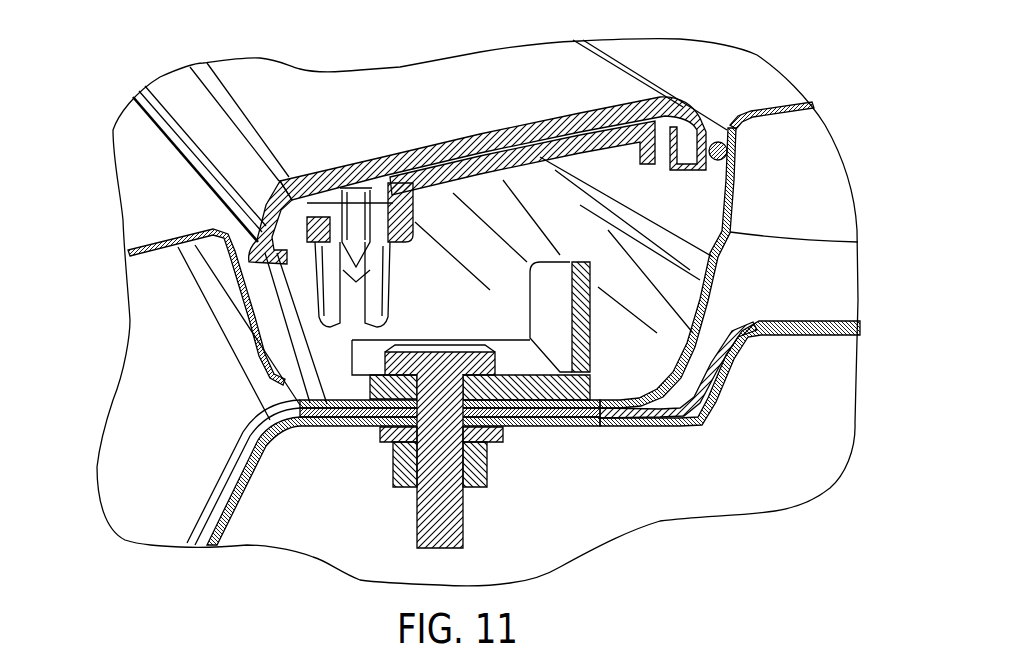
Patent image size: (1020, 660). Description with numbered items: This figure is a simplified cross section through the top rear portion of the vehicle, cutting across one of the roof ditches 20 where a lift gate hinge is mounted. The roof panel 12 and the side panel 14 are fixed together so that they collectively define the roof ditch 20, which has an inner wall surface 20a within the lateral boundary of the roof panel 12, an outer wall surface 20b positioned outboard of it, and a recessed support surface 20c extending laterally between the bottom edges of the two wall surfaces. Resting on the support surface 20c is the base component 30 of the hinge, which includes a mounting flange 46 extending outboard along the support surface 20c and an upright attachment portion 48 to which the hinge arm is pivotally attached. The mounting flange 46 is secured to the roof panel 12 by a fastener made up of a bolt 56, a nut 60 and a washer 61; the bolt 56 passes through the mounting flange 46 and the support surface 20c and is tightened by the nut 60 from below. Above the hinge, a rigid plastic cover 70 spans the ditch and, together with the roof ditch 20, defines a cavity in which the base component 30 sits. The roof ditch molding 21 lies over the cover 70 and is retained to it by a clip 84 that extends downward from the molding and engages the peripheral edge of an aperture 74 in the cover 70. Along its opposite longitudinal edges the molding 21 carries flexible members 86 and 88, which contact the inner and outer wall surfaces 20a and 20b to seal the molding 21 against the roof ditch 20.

The roof panel 12 is at (736, 82).
The side panel 14 is at (153, 213).
The roof ditch 20 is at (670, 300).
The inner wall surface 20a is at (633, 240).
The outer wall surface 20b is at (262, 327).
The recessed support surface 20c is at (330, 348).
The roof ditch molding 21 is at (316, 97).
The base component 30 is at (603, 305).
The mounting flange 46 is at (535, 387).
The upright attachment portion 48 is at (587, 323).
The bolt 56 is at (447, 515).
The nut 60 is at (395, 470).
The washer 61 is at (373, 433).
The cover 70 is at (492, 190).
The aperture 74 is at (355, 233).
The clip 84 is at (387, 298).
The flexible member 86 is at (722, 146).
The flexible member 88 is at (180, 148).